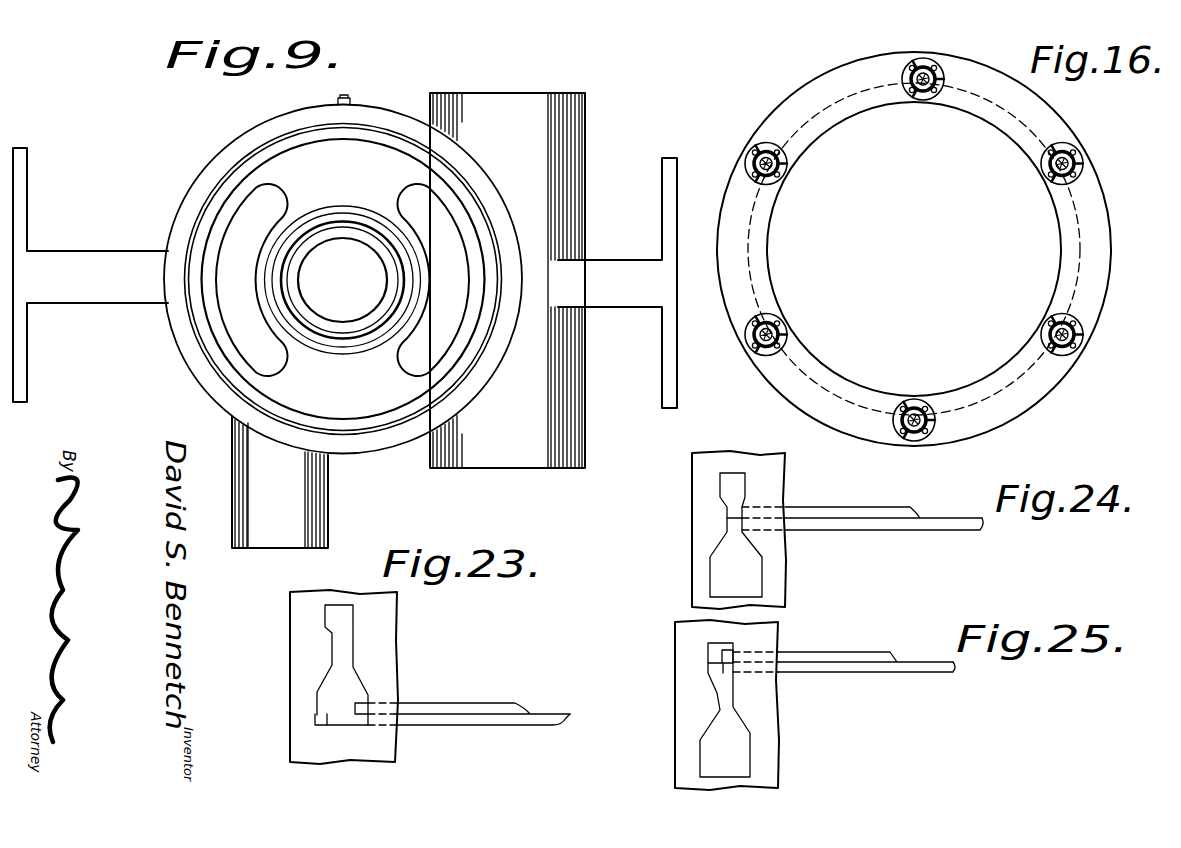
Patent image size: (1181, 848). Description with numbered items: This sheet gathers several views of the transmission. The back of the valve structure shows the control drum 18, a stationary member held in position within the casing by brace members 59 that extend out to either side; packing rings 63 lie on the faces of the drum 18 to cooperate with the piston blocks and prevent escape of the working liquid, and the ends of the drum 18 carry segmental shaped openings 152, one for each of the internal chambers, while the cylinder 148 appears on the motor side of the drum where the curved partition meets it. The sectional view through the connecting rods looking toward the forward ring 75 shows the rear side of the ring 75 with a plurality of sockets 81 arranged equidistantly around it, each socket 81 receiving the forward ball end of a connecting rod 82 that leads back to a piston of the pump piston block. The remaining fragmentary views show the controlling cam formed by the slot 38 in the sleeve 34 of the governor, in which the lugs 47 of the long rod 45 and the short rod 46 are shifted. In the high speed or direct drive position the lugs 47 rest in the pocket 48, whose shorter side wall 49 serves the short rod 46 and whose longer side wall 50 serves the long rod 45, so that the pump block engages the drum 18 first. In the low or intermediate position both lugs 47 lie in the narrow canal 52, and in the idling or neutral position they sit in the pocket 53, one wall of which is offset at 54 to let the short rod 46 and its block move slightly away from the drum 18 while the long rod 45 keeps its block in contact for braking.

In FIG. 9, the control drum 18 is at (200, 386).
In FIG. 23, the sleeve 34 is at (344, 677).
In FIG. 24, the sleeve 34 is at (778, 573).
In FIG. 25, the sleeve 34 is at (777, 770).
In FIG. 23, the slot 38 is at (325, 658).
In FIG. 24, the slot 38 is at (719, 527).
In FIG. 25, the slot 38 is at (752, 718).
In FIG. 23, the long rod 45 is at (480, 710).
In FIG. 24, the long rod 45 is at (918, 510).
In FIG. 25, the long rod 45 is at (868, 650).
In FIG. 23, the short rod 46 is at (490, 720).
In FIG. 24, the short rod 46 is at (945, 527).
In FIG. 25, the short rod 46 is at (940, 675).
In FIG. 23, the lug 47 is at (320, 725).
In FIG. 24, the lug 47 is at (735, 510).
In FIG. 25, the lug 47 is at (735, 643).
In FIG. 23, the pocket 48 is at (337, 697).
In FIG. 24, the pocket 48 is at (723, 585).
In FIG. 25, the pocket 48 is at (718, 763).
In FIG. 23, the shorter side wall 49 is at (318, 690).
In FIG. 24, the shorter side wall 49 is at (715, 571).
In FIG. 25, the shorter side wall 49 is at (702, 763).
In FIG. 23, the side wall 50 is at (365, 695).
In FIG. 24, the side wall 50 is at (752, 565).
In FIG. 25, the side wall 50 is at (748, 748).
In FIG. 23, the narrow canal 52 is at (345, 647).
In FIG. 24, the narrow canal 52 is at (732, 517).
In FIG. 25, the narrow canal 52 is at (718, 695).
In FIG. 23, the pocket 53 is at (330, 608).
In FIG. 24, the pocket 53 is at (738, 472).
In FIG. 25, the pocket 53 is at (708, 650).
In FIG. 23, the offset 54 is at (325, 620).
In FIG. 24, the offset 54 is at (720, 490).
In FIG. 25, the offset 54 is at (708, 668).
In FIG. 9, the brace member 59 is at (110, 262).
In FIG. 9, the packing ring 63 is at (247, 166).
In FIG. 16, the ring 75 is at (768, 252).
In FIG. 16, the socket 81 is at (790, 164).
In FIG. 16, the connecting rod 82 is at (748, 152).
In FIG. 9, the cylinder 148 is at (568, 130).
In FIG. 9, the segmental shaped opening 152 is at (320, 178).